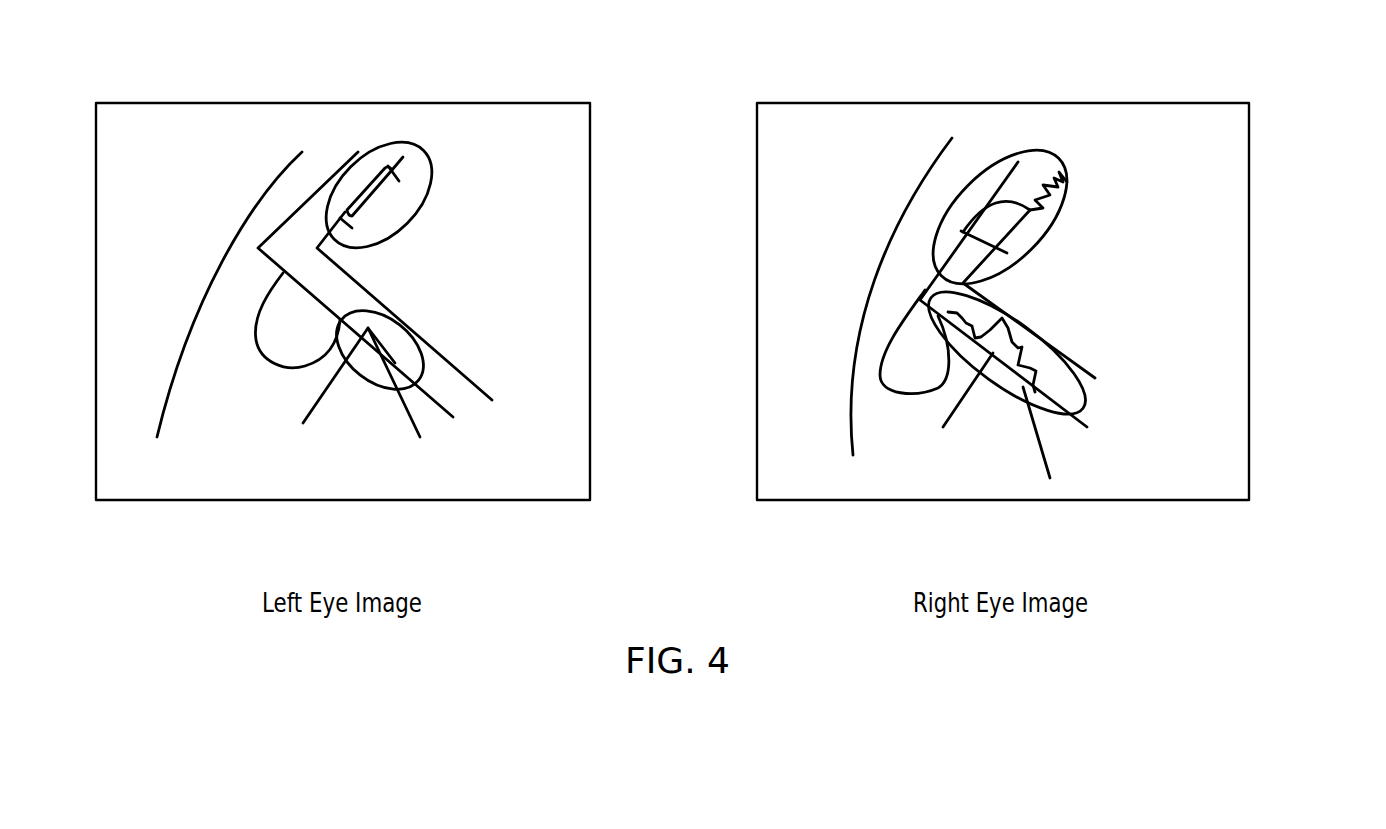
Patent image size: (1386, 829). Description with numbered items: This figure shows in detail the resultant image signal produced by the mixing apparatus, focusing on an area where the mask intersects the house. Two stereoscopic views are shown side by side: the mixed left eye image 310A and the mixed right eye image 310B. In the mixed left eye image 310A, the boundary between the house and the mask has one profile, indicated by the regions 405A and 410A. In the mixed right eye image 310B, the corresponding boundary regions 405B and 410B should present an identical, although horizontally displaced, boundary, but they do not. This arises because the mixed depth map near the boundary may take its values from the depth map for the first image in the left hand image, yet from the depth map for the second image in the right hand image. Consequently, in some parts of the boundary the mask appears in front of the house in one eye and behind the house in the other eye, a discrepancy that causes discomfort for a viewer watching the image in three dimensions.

The mixed left eye image 310A is at (591, 185).
The mixed right eye image 310B is at (1251, 185).
The boundary profile region of left eye image 405A is at (408, 143).
The boundary region of right eye image 405B is at (1031, 150).
The boundary profile region of left eye image 410A is at (372, 383).
The boundary region of right eye image 410B is at (1017, 397).